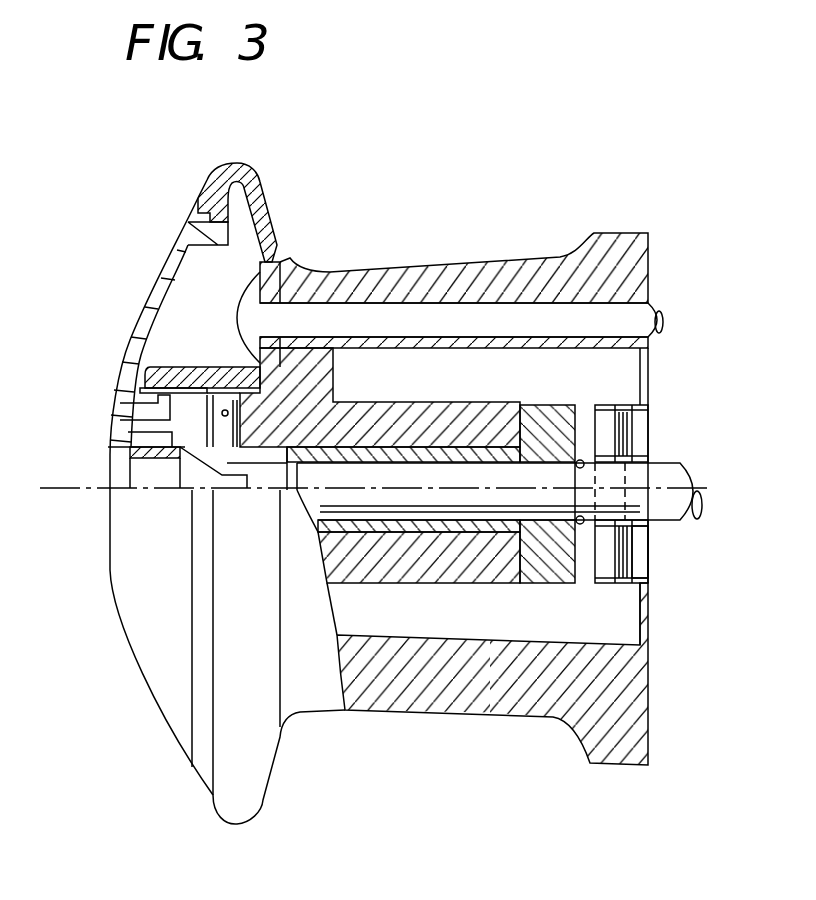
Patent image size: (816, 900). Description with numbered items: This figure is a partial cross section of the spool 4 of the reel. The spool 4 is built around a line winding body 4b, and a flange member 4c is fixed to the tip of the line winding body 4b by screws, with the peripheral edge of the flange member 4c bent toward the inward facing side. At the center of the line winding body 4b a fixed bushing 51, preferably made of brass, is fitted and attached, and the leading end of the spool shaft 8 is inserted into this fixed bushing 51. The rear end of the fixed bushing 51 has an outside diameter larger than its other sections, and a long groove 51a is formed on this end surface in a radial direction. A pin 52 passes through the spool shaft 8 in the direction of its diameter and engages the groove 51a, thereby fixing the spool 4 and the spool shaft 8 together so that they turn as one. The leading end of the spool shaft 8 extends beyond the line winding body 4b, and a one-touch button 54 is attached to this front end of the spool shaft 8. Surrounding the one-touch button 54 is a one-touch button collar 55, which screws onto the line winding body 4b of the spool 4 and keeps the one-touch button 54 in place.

The spool 4 is at (400, 190).
The line winding body 4b is at (366, 700).
The flange member 4c is at (228, 168).
The one-touch button collar 55 is at (152, 300).
The one-touch button 54 is at (110, 447).
The spool shaft 8 is at (676, 470).
The fixed bushing 51 is at (606, 440).
The pin 52 is at (620, 425).
The groove 51a is at (630, 562).